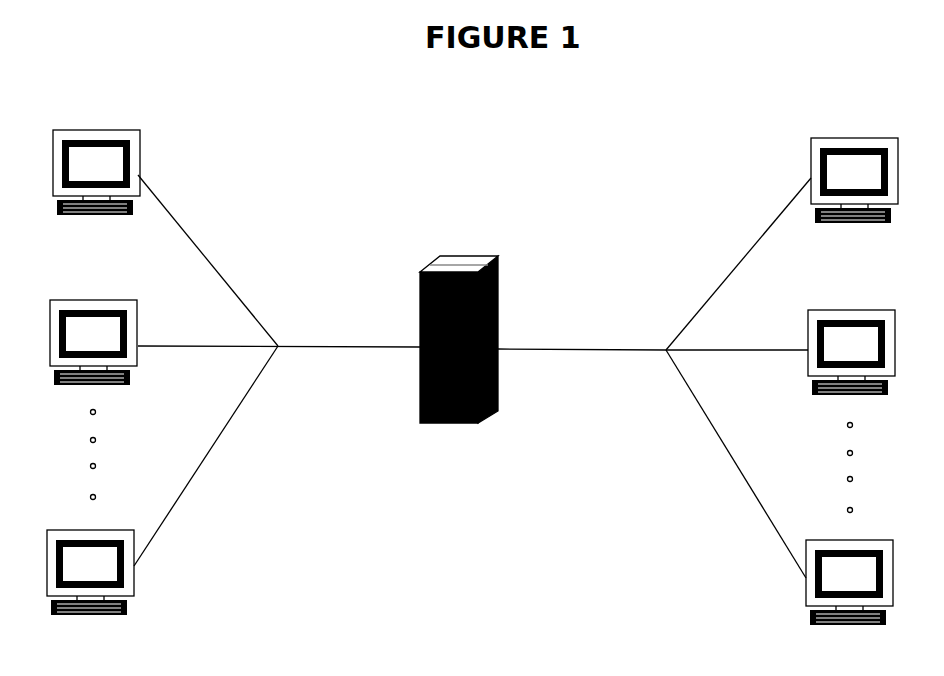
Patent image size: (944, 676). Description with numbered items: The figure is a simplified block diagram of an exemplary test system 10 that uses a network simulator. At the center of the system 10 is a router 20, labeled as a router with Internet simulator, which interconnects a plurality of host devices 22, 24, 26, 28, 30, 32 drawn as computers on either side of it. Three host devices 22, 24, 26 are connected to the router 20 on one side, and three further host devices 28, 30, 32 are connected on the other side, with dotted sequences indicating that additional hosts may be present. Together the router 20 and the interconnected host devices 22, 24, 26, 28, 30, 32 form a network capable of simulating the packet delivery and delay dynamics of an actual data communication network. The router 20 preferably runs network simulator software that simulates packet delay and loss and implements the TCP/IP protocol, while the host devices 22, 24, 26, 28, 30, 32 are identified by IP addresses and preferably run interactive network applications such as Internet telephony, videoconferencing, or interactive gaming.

The test system 10 is at (652, 84).
The router 20 is at (460, 258).
The host device 22 is at (95, 130).
The host device 24 is at (92, 300).
The host device 26 is at (89, 530).
The host device 28 is at (853, 138).
The host device 30 is at (850, 310).
The host device 32 is at (848, 540).